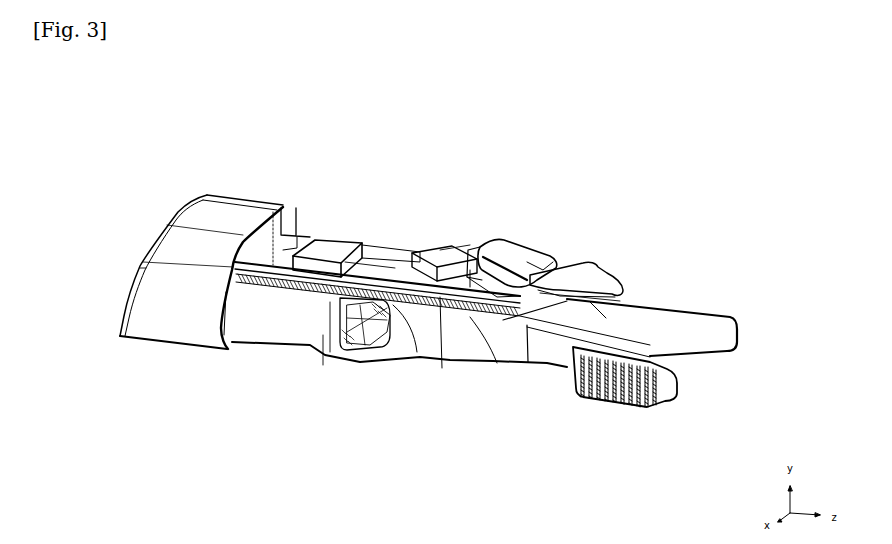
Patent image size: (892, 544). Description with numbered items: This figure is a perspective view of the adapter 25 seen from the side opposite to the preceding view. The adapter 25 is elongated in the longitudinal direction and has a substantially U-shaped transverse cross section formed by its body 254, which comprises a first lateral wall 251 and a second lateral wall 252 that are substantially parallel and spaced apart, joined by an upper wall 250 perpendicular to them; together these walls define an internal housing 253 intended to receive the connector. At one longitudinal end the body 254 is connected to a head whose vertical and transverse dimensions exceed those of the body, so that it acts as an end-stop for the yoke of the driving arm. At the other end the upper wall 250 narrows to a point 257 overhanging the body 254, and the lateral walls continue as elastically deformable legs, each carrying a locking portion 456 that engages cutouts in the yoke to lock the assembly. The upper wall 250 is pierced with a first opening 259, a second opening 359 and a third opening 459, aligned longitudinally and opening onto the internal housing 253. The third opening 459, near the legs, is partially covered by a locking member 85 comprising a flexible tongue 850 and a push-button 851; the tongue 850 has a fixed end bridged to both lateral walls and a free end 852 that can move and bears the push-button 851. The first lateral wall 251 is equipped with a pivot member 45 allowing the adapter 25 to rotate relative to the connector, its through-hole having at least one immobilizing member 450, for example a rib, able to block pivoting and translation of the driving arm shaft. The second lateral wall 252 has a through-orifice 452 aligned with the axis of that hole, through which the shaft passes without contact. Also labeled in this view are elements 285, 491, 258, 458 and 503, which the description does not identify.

The adapter 25 is at (102, 167).
The head portion 285 is at (177, 247).
The first opening 259 is at (298, 213).
The first lateral wall 251 is at (312, 213).
The upper wall 250 is at (347, 213).
The second opening 359 is at (368, 210).
The pivot member 45 is at (406, 210).
The guide surface 491 is at (432, 210).
The flexible tongue 850 is at (467, 270).
The locking member 85 is at (536, 236).
The push-button 851 is at (540, 254).
The point 257 is at (597, 270).
The tail upper surface 258 is at (603, 317).
The locking portion 456 is at (713, 343).
The body 254 is at (260, 318).
The second lateral wall 252 is at (323, 300).
The immobilizing member 450 is at (330, 330).
The through-orifice 452 is at (323, 335).
The internal housing 253 is at (390, 352).
The boss flange 458 is at (413, 335).
The rib 503 is at (442, 368).
The free end 852 is at (487, 327).
The third opening 459 is at (575, 330).